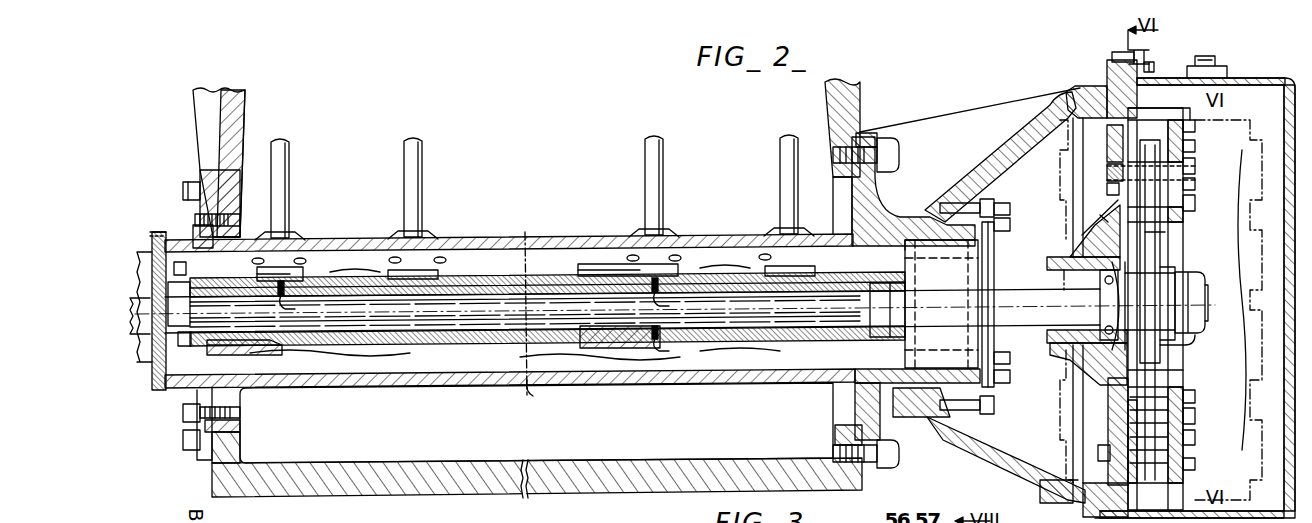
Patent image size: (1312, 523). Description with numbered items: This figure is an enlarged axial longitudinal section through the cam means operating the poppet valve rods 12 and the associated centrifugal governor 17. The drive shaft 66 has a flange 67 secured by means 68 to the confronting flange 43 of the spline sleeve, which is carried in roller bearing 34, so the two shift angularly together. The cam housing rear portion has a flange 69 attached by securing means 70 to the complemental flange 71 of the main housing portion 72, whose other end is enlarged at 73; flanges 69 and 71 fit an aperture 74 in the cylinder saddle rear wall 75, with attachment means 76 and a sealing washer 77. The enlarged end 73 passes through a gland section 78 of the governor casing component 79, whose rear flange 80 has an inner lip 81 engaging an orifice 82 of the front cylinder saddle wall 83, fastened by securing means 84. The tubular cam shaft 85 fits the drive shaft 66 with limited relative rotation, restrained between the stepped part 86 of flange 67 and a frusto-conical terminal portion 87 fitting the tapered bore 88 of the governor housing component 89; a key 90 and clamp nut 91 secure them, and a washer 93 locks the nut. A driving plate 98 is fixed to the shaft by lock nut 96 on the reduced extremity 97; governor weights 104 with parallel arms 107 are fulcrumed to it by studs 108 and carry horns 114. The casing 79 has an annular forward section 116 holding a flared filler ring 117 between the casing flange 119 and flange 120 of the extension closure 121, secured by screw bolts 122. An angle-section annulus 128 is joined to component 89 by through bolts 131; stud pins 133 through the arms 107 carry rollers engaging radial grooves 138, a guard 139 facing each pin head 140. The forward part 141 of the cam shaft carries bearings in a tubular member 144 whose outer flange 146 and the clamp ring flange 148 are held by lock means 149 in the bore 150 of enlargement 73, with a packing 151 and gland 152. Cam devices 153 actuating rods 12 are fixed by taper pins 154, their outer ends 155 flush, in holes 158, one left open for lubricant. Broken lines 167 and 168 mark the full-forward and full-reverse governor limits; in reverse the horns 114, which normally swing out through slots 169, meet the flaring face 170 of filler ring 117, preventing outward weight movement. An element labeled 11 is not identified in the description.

The housing 11 is at (386, 371).
The poppet valve rods 12 is at (291, 181).
The centrifugal governor 17 is at (1256, 300).
The roller bearing 34 is at (197, 398).
The flange 43 is at (160, 236).
The drive shaft 66 is at (540, 343).
The flange 67 is at (178, 314).
The securing means 68 is at (186, 270).
The flange 69 is at (228, 186).
The securing means 70 is at (240, 220).
The complemental flange 71 is at (240, 427).
The main housing portion 72 is at (542, 396).
The enlarged end 73 is at (880, 369).
The aperture 74 is at (240, 448).
The cylinder saddle rear wall 75 is at (245, 108).
The attachment means 76 is at (183, 191).
The sealing gasket 77 is at (190, 450).
The gland section 78 is at (908, 200).
The casing component 79 is at (985, 163).
The rear flange 80 is at (870, 133).
The inner lip 81 is at (855, 408).
The orifice 82 is at (840, 190).
The front cylinder saddle wall 83 is at (855, 85).
The securing means 84 is at (897, 152).
The tubular cam shaft 85 is at (633, 313).
The stepped part 86 is at (184, 346).
The frusto-conical terminal portion 87 is at (1045, 343).
The tapered bore 88 is at (1068, 362).
The governor housing component 89 is at (1108, 420).
The key 90 is at (1080, 252).
The clamp nut 91 is at (1089, 217).
The washer 93 is at (1095, 292).
The lock nut 96 is at (1207, 320).
The screw-threaded extremity 97 is at (1205, 302).
The driving plate 98 is at (1175, 270).
The governor weights 104 is at (1155, 250).
The parallel arms 107 is at (1165, 234).
The stud 108 is at (1185, 342).
The horn 114 is at (1183, 115).
The annular forward section 116 is at (1110, 80).
The filler ring 117 is at (1078, 86).
The flange 119 is at (1112, 57).
The flange 120 is at (1144, 52).
The extension closure 121 is at (1262, 78).
The screw bolts 122 is at (1154, 67).
The angle-section annulus 128 is at (1195, 146).
The through bolts 131 is at (1098, 452).
The stud pins 133 is at (1107, 176).
The radial grooves 138 is at (1195, 205).
The guard 139 is at (1195, 185).
The head 140 is at (1195, 170).
The forward part 141 is at (880, 299).
The tubular member 144 is at (941, 304).
The outer flange 146 is at (982, 299).
The flange 148 is at (1016, 204).
The lock means 149 is at (1010, 224).
The bore 150 is at (905, 253).
The packing 151 is at (915, 417).
The gland 152 is at (975, 198).
The rear cam device 153 is at (533, 261).
The taper pins 154 is at (490, 299).
The outer ends 155 is at (262, 270).
The holes 158 is at (454, 352).
The broken lines 167 is at (1250, 110).
The broken lines 168 is at (1060, 158).
The circumferential slots 169 is at (1195, 126).
The flaring face 170 is at (1155, 230).